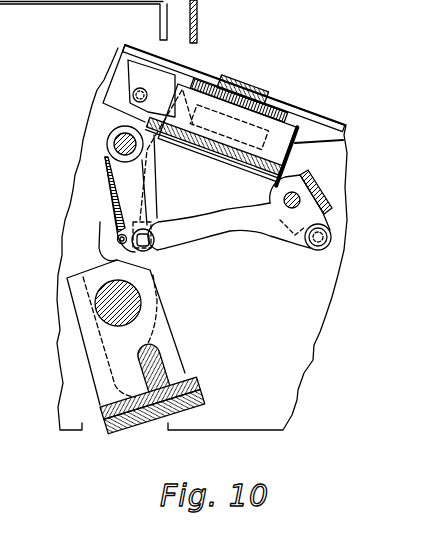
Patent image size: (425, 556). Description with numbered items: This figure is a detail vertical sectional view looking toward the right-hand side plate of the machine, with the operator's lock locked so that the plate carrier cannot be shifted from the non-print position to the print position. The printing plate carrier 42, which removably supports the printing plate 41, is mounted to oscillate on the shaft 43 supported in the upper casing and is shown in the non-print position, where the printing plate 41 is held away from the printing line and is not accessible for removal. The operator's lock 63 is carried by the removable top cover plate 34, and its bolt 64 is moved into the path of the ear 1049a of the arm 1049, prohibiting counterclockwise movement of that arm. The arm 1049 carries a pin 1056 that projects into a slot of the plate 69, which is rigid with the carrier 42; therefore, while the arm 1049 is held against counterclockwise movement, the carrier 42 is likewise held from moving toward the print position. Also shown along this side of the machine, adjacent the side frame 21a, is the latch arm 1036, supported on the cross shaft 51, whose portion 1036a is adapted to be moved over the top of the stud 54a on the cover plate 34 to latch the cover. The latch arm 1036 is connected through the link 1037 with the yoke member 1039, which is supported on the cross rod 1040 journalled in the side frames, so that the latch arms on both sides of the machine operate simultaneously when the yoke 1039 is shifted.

The side frame 21a is at (290, 400).
The portion of latch arm 1036a is at (140, 47).
The top cover plate 34 is at (177, 64).
The operator's lock 63 is at (240, 78).
The bolt 64 is at (290, 128).
The stud 54a is at (134, 93).
The cross shaft 51 is at (116, 140).
The ear 1049a is at (179, 150).
The latch arm 1036 is at (153, 193).
The arm 1049 is at (106, 200).
The pin 1056 is at (117, 241).
The plate 69 is at (97, 258).
The link 1037 is at (206, 236).
The yoke member 1039 is at (326, 168).
The cross rod 1040 is at (293, 208).
The shaft 43 is at (115, 299).
The printing plate carrier 42 is at (106, 412).
The printing plate 41 is at (152, 414).